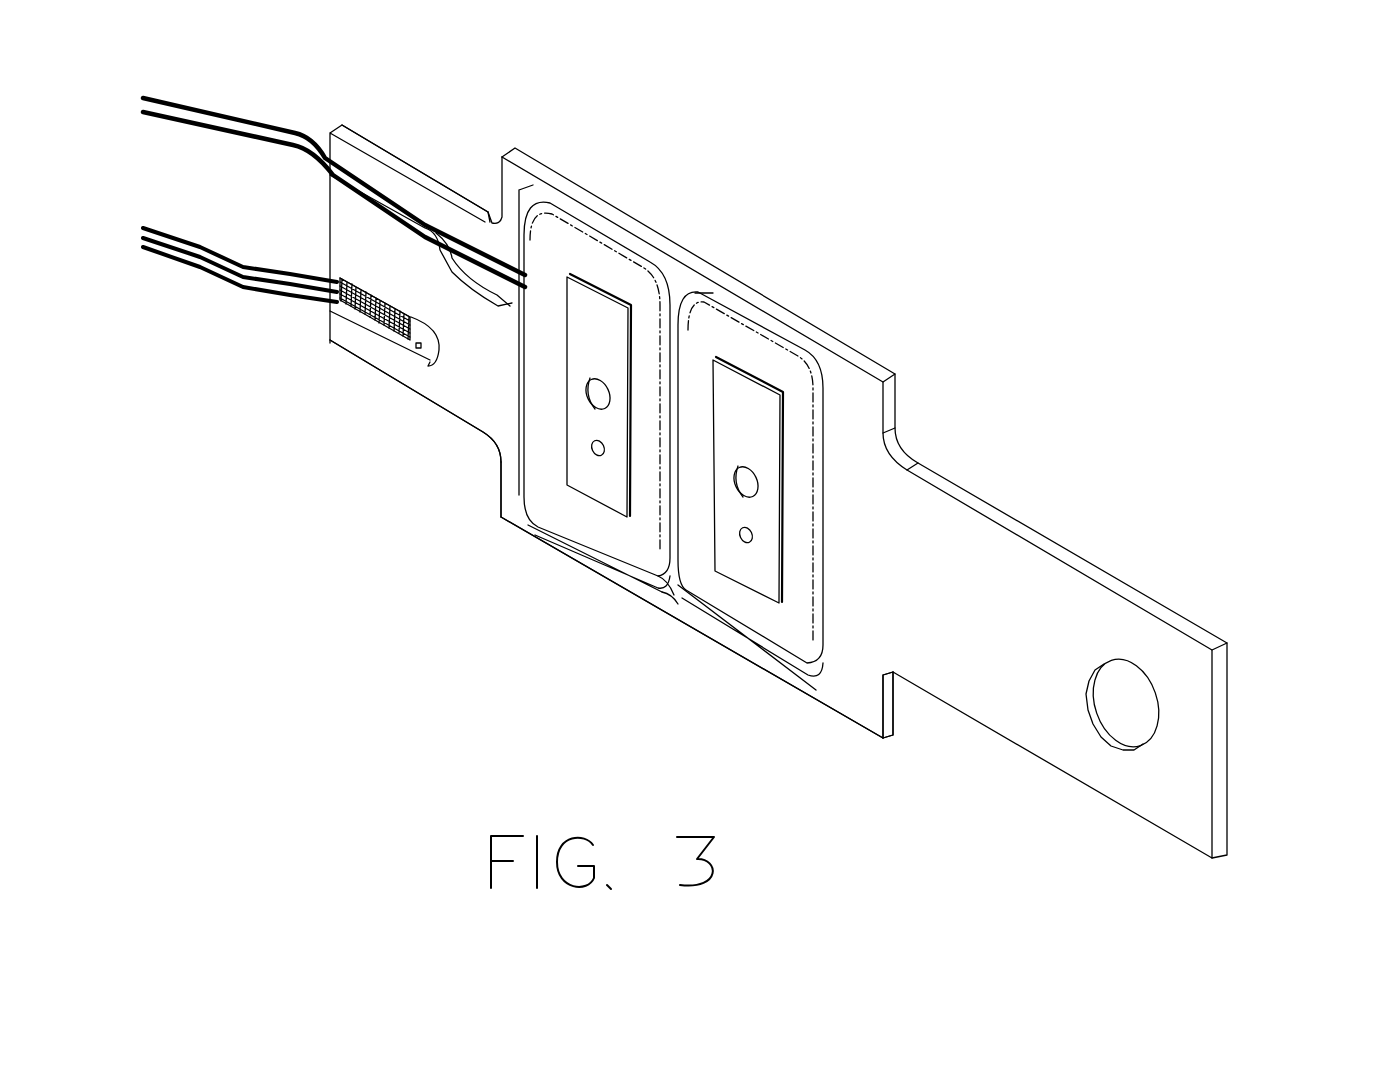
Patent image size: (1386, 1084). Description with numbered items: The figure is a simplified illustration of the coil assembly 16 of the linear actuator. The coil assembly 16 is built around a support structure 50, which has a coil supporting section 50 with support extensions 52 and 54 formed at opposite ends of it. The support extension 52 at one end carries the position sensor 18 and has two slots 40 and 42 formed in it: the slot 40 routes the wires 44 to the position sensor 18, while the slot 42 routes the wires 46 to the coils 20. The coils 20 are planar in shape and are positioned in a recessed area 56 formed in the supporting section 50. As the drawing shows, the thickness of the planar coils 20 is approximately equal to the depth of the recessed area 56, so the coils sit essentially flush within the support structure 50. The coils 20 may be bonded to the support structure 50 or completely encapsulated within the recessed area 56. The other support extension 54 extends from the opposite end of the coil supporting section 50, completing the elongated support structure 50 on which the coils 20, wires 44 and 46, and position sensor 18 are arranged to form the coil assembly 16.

The coil assembly 16 is at (1052, 515).
The position sensor 18 is at (407, 363).
The coils 20 is at (563, 260).
The slot 40 is at (353, 331).
The slot 42 is at (346, 200).
The wires 44 is at (197, 268).
The wires 46 is at (236, 108).
The support structure 50 is at (855, 709).
The support extension 52 is at (477, 408).
The support extension 54 is at (1030, 723).
The recessed area 56 is at (648, 587).